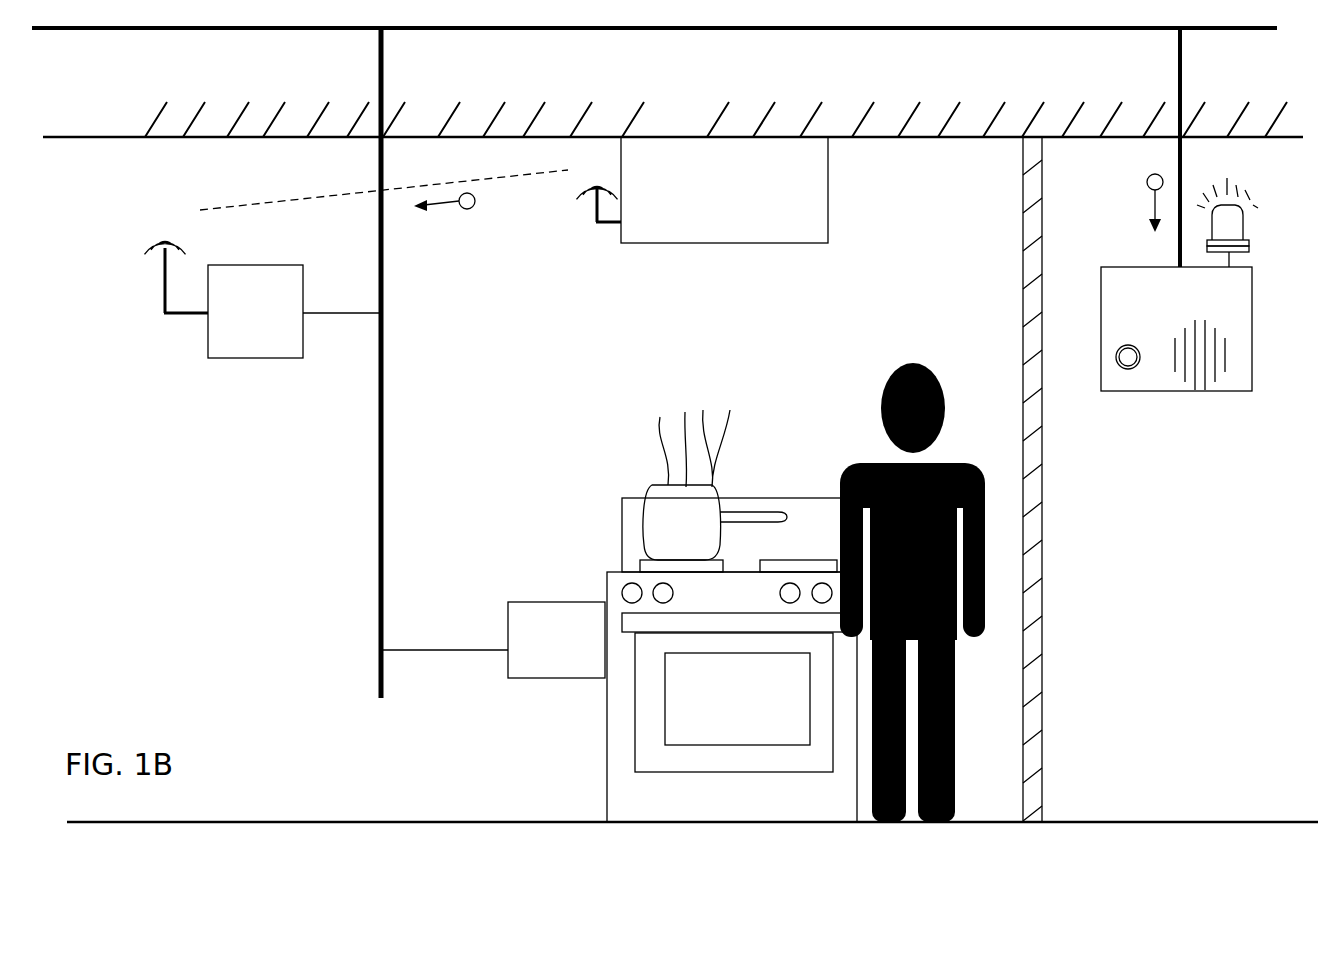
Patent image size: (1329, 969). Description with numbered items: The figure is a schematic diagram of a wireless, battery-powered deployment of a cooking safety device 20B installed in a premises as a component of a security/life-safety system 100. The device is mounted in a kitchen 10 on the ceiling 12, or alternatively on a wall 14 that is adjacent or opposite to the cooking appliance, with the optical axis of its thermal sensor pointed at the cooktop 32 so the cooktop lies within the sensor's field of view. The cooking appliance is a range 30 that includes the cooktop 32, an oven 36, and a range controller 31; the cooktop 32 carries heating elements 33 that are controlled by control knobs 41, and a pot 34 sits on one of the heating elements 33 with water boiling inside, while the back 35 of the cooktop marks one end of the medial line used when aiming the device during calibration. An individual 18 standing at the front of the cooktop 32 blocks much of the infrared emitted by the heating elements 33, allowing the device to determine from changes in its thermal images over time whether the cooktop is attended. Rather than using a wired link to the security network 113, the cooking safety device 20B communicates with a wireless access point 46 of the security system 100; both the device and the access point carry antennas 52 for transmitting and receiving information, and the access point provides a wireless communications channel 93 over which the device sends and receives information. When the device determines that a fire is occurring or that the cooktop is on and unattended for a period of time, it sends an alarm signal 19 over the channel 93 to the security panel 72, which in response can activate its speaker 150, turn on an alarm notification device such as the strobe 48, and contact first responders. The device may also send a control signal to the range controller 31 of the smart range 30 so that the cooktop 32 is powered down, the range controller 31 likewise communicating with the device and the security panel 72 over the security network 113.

The security network 113 is at (523, 30).
The ceiling 12 is at (673, 103).
The wall 14 is at (1042, 612).
The kitchen 10 is at (718, 360).
The wireless communications channel 93 is at (275, 203).
The antenna 52 is at (165, 293).
The wireless access point 46 is at (294, 311).
The cooking safety device 20B is at (724, 190).
The alarm signal 19 is at (441, 206).
The security panel 72 is at (1176, 329).
The speaker 150 is at (1195, 391).
The strobe 48 is at (1247, 222).
The range 30 is at (680, 620).
The oven 36 is at (734, 702).
The cooktop 32 is at (612, 572).
The control knob 41 is at (623, 591).
The heating element 33 is at (820, 560).
The back of the cooktop 35 is at (622, 510).
The pot 34 is at (653, 487).
The range controller 31 is at (493, 640).
The individual 18 is at (888, 375).
The security/life-safety system 100 is at (150, 624).